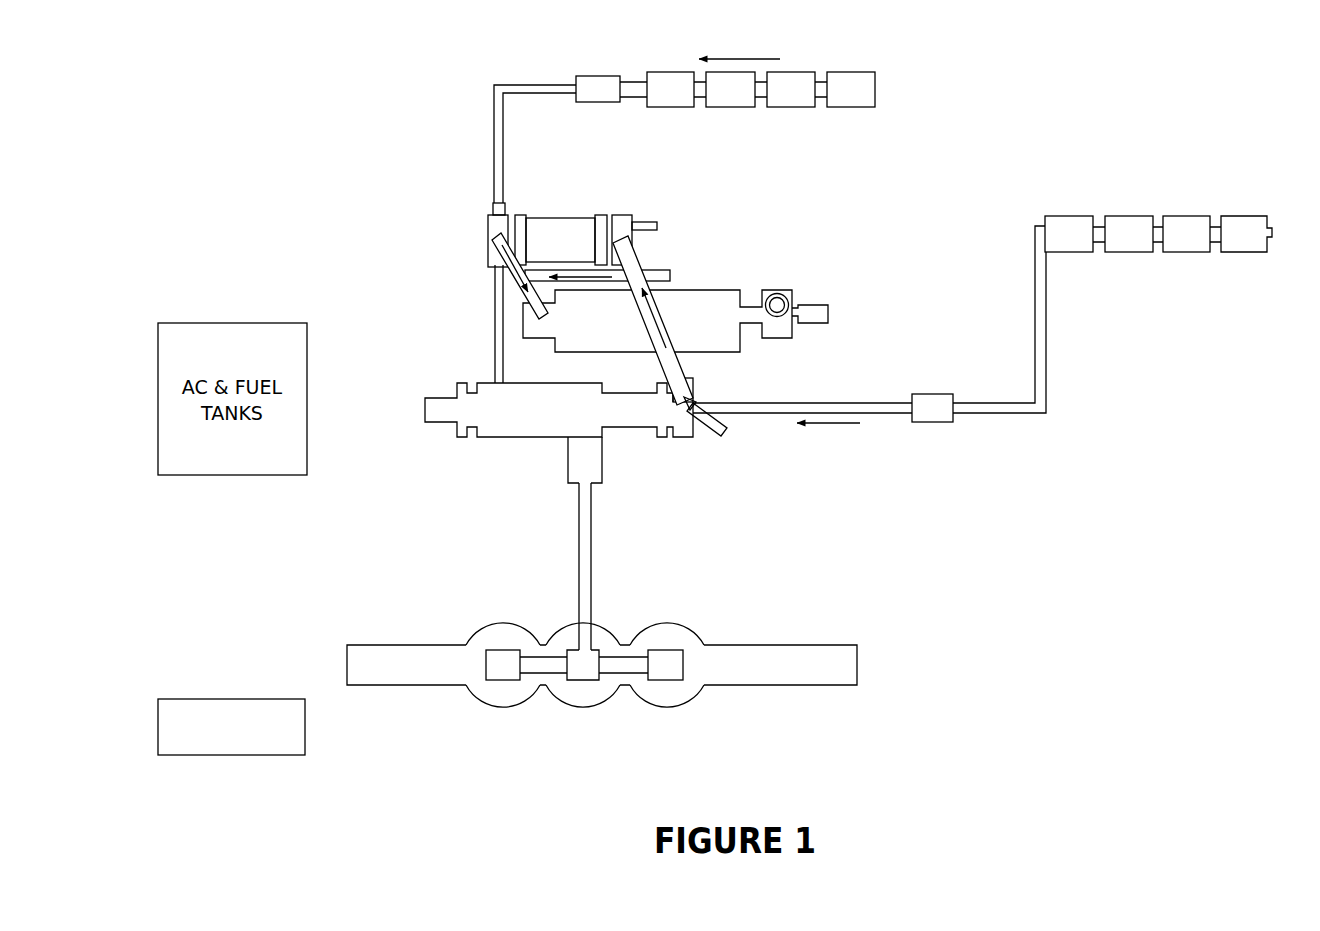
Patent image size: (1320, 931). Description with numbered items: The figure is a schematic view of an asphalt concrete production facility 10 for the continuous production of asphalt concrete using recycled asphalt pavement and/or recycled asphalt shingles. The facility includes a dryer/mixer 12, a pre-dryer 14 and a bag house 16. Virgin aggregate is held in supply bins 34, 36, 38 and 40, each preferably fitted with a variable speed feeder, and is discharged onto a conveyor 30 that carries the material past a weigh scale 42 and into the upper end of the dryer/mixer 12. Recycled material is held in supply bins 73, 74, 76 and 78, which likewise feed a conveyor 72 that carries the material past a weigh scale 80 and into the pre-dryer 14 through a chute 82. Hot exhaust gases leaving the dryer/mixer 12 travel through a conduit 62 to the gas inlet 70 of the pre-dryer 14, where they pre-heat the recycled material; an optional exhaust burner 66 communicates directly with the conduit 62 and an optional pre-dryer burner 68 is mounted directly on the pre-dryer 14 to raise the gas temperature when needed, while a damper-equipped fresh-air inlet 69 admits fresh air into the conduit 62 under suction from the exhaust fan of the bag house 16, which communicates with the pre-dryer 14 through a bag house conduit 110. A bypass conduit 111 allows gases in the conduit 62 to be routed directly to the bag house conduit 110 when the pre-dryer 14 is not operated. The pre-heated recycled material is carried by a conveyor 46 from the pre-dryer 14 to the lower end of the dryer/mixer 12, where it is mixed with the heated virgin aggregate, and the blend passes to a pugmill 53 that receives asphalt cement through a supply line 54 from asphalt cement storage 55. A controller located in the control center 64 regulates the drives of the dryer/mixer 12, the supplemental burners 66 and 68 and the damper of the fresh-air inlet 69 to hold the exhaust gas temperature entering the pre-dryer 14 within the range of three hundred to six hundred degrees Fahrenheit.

The asphalt concrete production facility 10 is at (283, 170).
The dryer/mixer 12 is at (519, 440).
The pre-dryer 14 is at (581, 215).
The bag house 16 is at (574, 355).
The conveyor 30 is at (805, 402).
The supply bin 34 is at (1072, 214).
The supply bin 36 is at (1131, 214).
The supply bin 38 is at (1189, 214).
The supply bin 40 is at (1246, 214).
The weigh scale 42 is at (937, 392).
The conveyor 46 is at (494, 320).
The pugmill 53 is at (565, 460).
The supply line 54 is at (595, 566).
The asphalt cement storage 55 is at (691, 610).
The conduit 62 is at (661, 370).
The control center 64 is at (232, 697).
The exhaust burner 66 is at (680, 273).
The pre-dryer burner 68 is at (660, 221).
The fresh-air inlet 69 is at (700, 388).
The gas inlet 70 is at (656, 243).
The conveyor 72 is at (487, 134).
The supply bin 73 is at (675, 71).
The supply bin 74 is at (727, 108).
The supply bin 76 is at (786, 108).
The supply bin 78 is at (846, 108).
The weigh scale 80 is at (597, 75).
The chute 82 is at (490, 206).
The bag house conduit 110 is at (511, 283).
The bypass conduit 111 is at (594, 282).